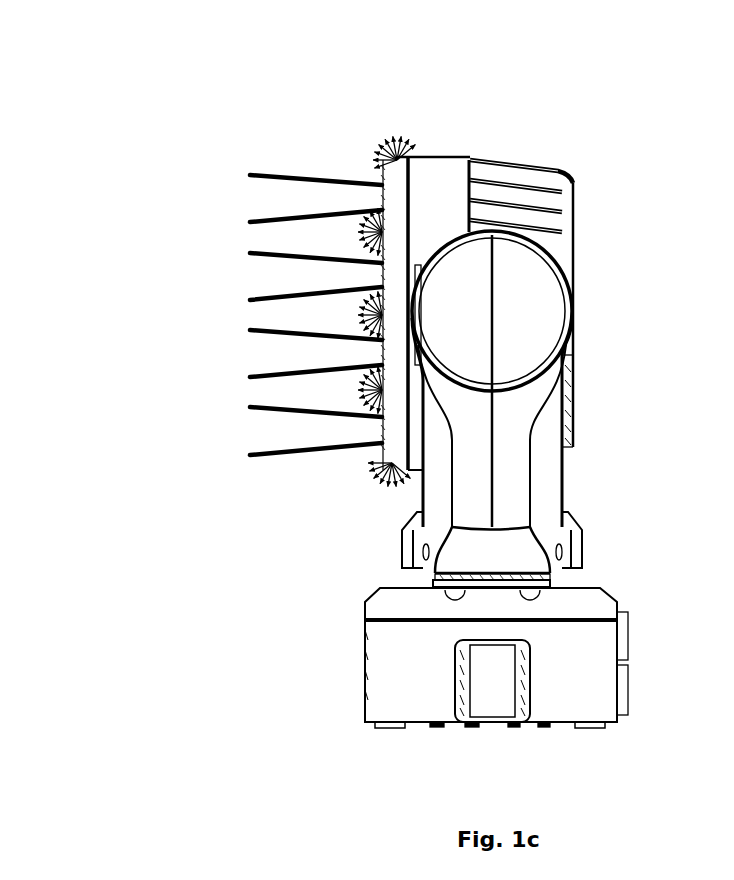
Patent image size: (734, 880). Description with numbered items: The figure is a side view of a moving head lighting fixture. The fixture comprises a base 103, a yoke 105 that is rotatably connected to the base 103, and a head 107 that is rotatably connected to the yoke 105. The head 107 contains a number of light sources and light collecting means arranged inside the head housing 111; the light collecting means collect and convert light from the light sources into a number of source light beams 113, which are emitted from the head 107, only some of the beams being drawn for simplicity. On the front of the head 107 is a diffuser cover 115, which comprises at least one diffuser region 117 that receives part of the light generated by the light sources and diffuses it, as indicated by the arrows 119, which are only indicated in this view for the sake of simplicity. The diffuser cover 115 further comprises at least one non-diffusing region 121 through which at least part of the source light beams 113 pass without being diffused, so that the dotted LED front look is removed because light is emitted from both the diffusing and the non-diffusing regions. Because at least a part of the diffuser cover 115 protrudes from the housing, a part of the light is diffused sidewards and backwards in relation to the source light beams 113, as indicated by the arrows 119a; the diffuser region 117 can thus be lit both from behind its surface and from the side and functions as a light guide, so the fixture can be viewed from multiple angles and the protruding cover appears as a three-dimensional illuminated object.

The base 103 is at (448, 740).
The yoke 105 is at (562, 482).
The head 107 is at (592, 200).
The head housing 111 is at (468, 160).
The source light beams 113 is at (263, 202).
The diffuser cover 115 is at (393, 197).
The diffuser region 117 is at (400, 457).
The arrows indicating diffused light 119 is at (53, 190).
The arrows indicating sidewards and backwards diffused light 119a is at (388, 120).
The non-diffusing region 121 is at (382, 352).